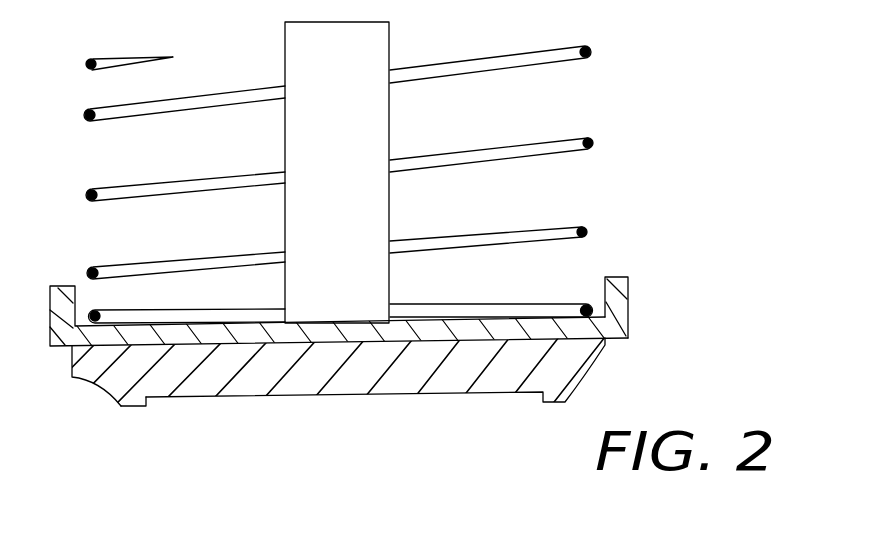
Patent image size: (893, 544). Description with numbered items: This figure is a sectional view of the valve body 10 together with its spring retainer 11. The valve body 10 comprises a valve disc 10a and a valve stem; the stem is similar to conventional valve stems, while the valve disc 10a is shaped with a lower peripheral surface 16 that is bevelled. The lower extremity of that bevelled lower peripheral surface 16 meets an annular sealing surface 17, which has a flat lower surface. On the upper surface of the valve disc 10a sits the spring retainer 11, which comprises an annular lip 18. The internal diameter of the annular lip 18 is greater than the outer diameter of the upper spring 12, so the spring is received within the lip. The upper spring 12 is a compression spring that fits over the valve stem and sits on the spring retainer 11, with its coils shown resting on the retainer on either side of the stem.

The valve body 10 is at (464, 416).
The valve disc 10a is at (285, 390).
The spring retainer 11 is at (619, 313).
The upper spring 12 is at (473, 77).
The lower peripheral surface 16 is at (104, 393).
The annular sealing surface 17 is at (138, 413).
The annular lip 18 is at (617, 276).